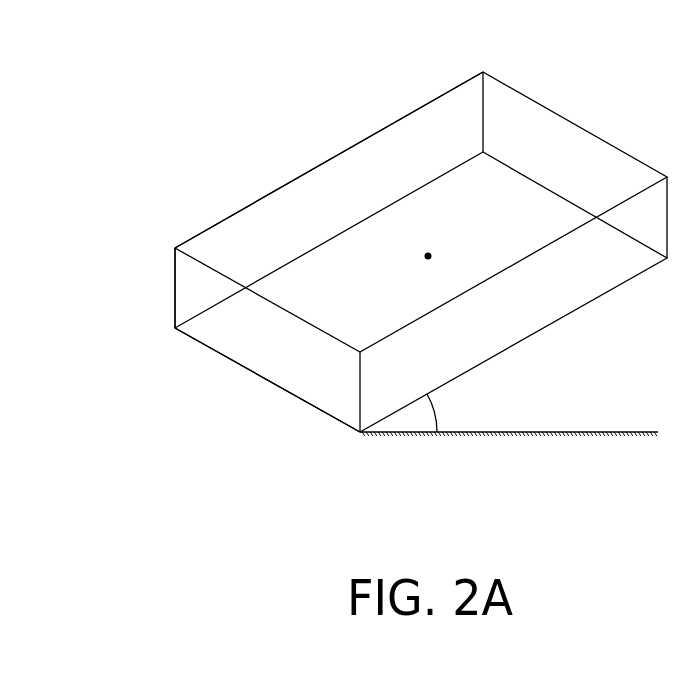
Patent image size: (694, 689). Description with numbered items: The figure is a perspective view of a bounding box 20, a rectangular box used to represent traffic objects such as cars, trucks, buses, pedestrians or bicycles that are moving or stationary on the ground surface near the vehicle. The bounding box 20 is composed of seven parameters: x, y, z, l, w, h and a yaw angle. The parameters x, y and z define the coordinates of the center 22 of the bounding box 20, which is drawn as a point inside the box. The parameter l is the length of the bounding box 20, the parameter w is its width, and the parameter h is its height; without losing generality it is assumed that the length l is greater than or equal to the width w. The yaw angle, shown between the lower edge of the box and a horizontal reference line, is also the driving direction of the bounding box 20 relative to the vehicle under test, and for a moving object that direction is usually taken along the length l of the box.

The bounding box 20 is at (534, 101).
The center 22 is at (431, 254).
The length l is at (329, 160).
The height h is at (162, 288).
The width w is at (267, 380).